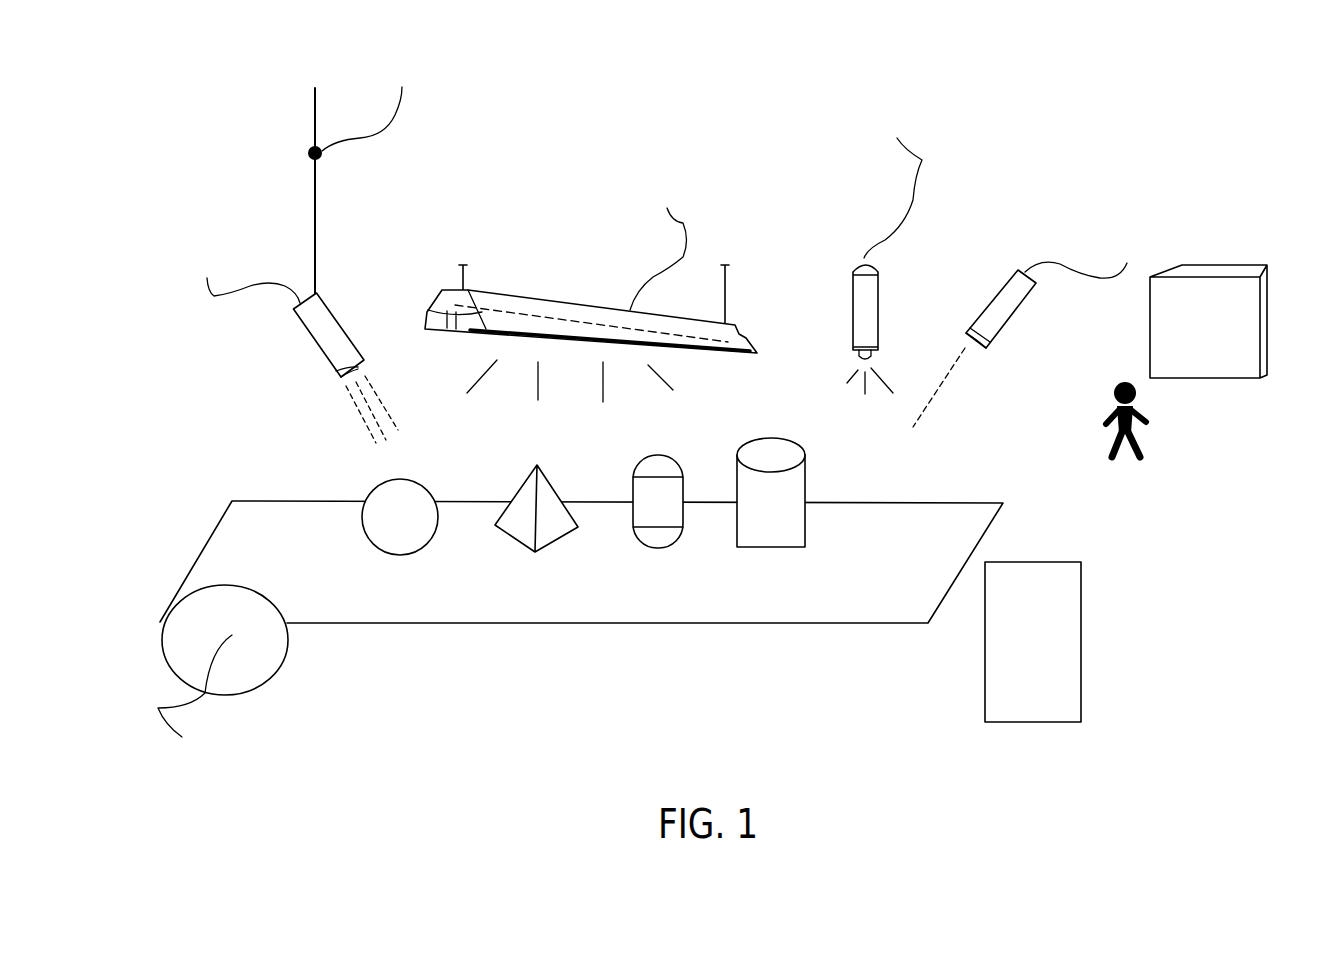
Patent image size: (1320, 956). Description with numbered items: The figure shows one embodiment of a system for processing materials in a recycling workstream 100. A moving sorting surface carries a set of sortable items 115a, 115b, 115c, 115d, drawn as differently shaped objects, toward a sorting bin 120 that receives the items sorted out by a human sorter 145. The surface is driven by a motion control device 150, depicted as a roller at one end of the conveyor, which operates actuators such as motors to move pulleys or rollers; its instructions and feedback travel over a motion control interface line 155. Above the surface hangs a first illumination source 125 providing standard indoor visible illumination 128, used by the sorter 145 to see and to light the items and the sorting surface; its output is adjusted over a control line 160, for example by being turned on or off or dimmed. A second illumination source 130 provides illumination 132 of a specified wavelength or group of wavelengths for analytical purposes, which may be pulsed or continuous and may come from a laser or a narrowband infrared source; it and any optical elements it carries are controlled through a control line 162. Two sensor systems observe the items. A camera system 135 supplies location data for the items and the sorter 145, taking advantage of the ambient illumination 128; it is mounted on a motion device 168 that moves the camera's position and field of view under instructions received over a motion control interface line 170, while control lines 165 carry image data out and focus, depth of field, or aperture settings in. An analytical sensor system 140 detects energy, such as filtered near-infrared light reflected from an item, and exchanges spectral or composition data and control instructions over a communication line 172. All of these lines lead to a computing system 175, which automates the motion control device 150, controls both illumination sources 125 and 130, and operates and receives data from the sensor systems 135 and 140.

The recycling workstream 100 is at (413, 668).
The sortable item 115a is at (400, 555).
The sortable item 115b is at (515, 545).
The sortable item 115c is at (660, 553).
The sortable item 115d is at (770, 553).
The sorting bin 120 is at (1208, 321).
The illumination source 125 is at (548, 300).
The illumination 128 is at (673, 390).
The illumination source 130 is at (853, 315).
The illumination 132 is at (863, 383).
The camera system 135 is at (316, 346).
The sensor system 140 is at (992, 300).
The sorter 145 is at (1113, 432).
The motion control device 150 is at (250, 695).
The motion control interface line 155 is at (195, 698).
The control line 160 is at (683, 223).
The control line 162 is at (893, 185).
The control line 165 is at (213, 297).
The motion device 168 is at (308, 151).
The motion control interface line 170 is at (402, 110).
The communication line 172 is at (1082, 270).
The computing system 175 is at (1033, 642).